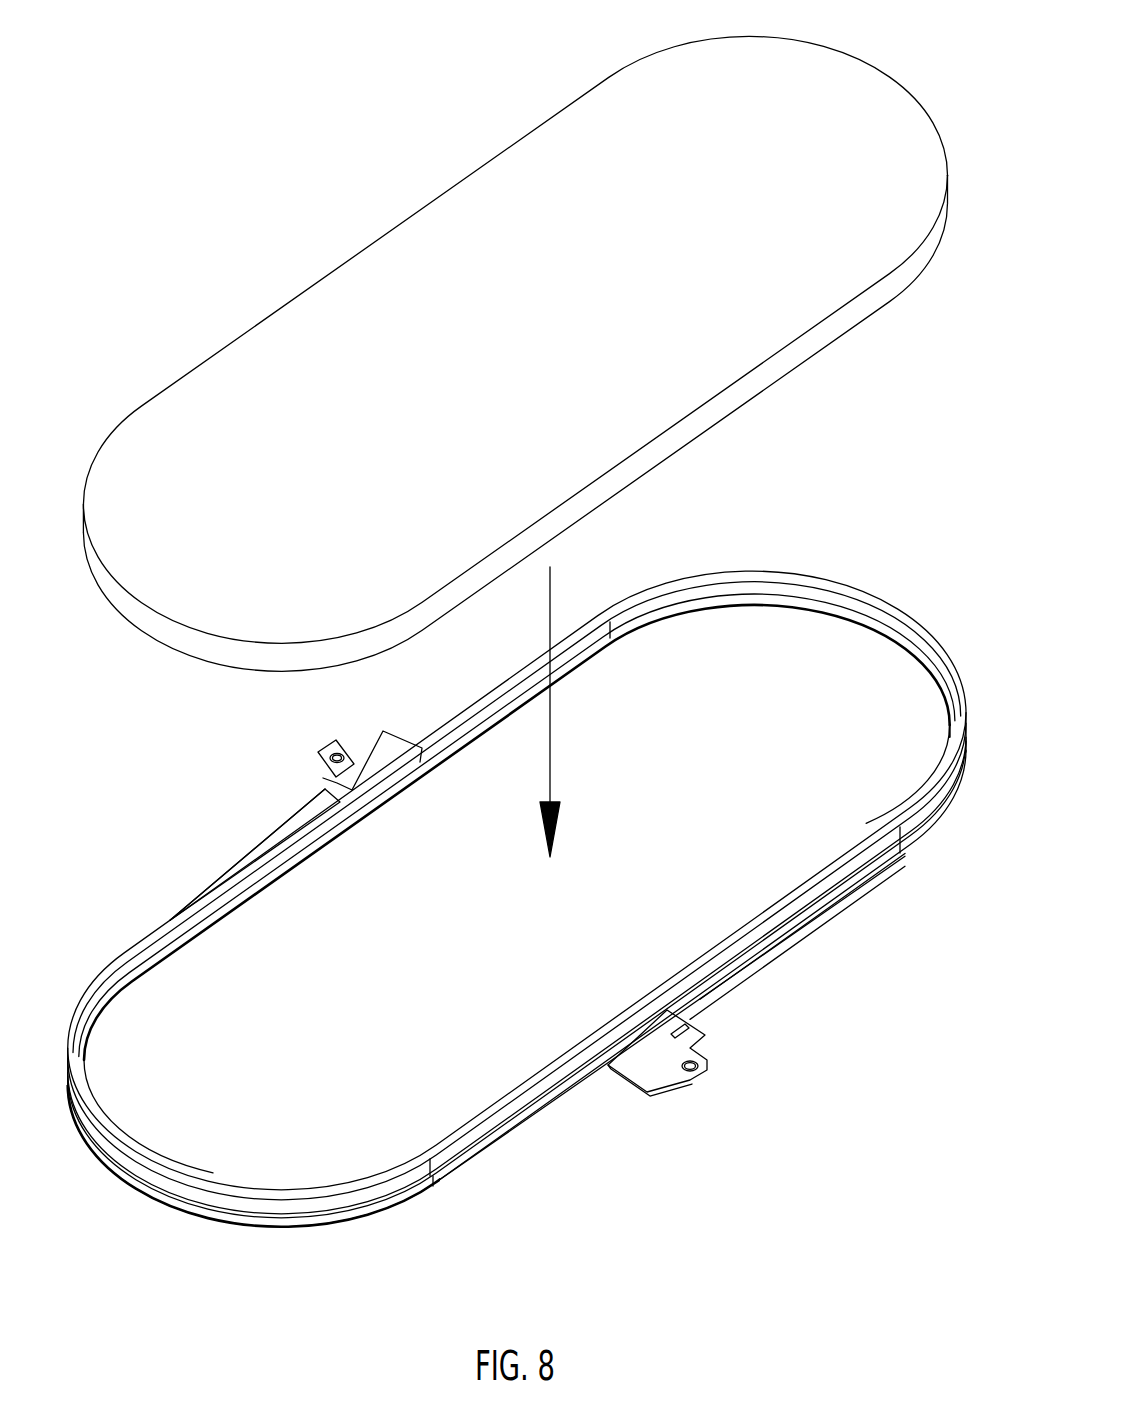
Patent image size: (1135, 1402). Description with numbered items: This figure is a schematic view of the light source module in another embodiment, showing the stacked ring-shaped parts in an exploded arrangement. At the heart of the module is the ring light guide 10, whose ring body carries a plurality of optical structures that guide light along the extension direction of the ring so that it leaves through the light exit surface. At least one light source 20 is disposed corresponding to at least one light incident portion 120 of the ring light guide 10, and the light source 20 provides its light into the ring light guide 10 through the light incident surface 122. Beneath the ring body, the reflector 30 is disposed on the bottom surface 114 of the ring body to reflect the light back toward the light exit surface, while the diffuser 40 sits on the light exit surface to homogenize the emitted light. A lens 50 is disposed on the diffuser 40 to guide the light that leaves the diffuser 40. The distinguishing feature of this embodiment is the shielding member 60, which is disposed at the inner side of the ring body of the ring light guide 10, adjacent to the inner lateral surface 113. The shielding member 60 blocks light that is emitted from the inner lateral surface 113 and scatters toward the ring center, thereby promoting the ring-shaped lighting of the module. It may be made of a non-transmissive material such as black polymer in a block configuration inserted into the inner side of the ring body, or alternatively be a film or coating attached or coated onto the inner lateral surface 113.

The shielding member 60 is at (838, 47).
The lens 50 is at (707, 578).
The diffuser 40 is at (776, 597).
The reflector 30 is at (845, 620).
The ring light guide 10 is at (818, 613).
The light source 20 is at (350, 782).
The light incident portion 120 is at (313, 805).
The light incident surface 122 is at (700, 1047).
The inner lateral surface 113 is at (220, 912).
The bottom surface 114 is at (513, 1120).